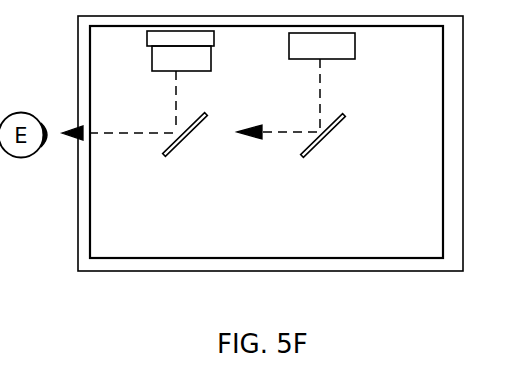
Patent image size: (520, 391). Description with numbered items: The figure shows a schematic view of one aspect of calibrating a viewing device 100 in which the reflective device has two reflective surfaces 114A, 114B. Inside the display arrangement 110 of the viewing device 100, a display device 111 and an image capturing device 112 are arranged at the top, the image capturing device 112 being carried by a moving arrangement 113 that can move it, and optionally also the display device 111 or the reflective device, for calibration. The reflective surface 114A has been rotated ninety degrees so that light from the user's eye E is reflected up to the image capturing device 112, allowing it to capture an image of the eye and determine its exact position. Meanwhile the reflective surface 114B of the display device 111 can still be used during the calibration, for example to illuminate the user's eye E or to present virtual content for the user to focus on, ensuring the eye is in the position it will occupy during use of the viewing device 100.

The viewing device 100 is at (416, 281).
The display arrangement 110 is at (128, 258).
The display device 111 is at (322, 46).
The image capturing device 112 is at (181, 59).
The moving arrangement 113 is at (180, 39).
The reflective surface 114A is at (180, 140).
The reflective surface 114B is at (318, 143).